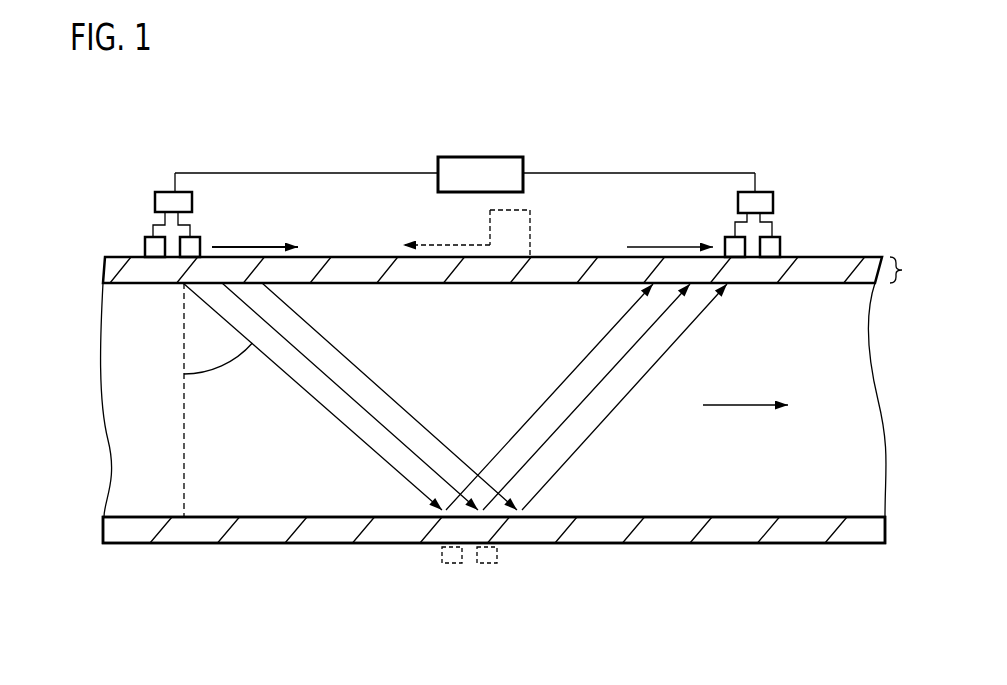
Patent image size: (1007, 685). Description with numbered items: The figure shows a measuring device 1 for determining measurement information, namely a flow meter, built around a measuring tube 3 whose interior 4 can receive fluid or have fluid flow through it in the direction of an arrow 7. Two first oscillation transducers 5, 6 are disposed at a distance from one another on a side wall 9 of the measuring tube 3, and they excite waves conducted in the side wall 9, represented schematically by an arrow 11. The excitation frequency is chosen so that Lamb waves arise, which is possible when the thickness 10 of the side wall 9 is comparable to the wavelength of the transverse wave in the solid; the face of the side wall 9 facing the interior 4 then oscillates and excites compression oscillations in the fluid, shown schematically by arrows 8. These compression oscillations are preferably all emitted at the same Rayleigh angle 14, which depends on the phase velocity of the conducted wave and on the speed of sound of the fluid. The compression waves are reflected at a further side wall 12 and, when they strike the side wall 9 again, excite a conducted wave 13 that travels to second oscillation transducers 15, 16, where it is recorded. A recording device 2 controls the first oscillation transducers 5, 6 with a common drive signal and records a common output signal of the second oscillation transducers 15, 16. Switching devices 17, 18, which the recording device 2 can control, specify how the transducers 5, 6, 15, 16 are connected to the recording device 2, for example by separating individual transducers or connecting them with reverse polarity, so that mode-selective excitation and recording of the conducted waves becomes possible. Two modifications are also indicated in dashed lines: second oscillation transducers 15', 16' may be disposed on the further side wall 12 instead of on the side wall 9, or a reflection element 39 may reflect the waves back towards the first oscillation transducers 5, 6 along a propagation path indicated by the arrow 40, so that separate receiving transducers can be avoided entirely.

The measuring device 1 is at (647, 103).
The recording device 2 is at (480, 157).
The measuring tube 3 is at (670, 546).
The interior 4 is at (137, 482).
The first oscillation transducer 5 is at (146, 247).
The first oscillation transducer 6 is at (200, 240).
The arrow 7 is at (733, 405).
The arrows 8 is at (372, 380).
The side wall 9 is at (362, 268).
The thickness 10 is at (910, 270).
The arrow 11 is at (245, 247).
The further side wall 12 is at (740, 530).
The conducted wave 13 is at (658, 242).
The Rayleigh angle 14 is at (215, 368).
The second oscillation transducer 15 is at (722, 218).
The second oscillation transducer 16 is at (803, 240).
The second oscillation transducer 15' is at (465, 585).
The second oscillation transducer 16' is at (504, 585).
The switching device 17 is at (171, 192).
The switching device 18 is at (773, 203).
The reflection element 39 is at (520, 227).
The arrow 40 is at (447, 241).